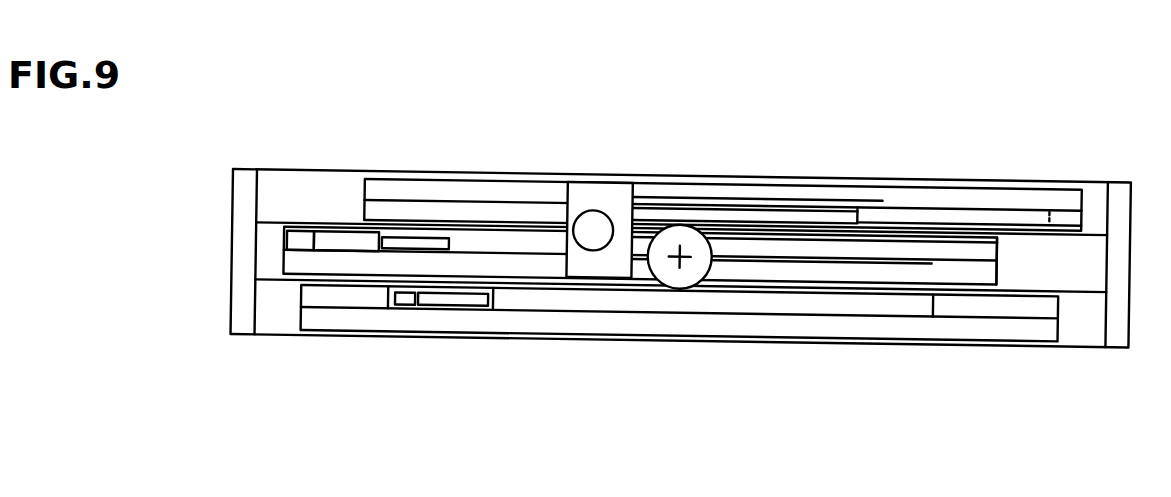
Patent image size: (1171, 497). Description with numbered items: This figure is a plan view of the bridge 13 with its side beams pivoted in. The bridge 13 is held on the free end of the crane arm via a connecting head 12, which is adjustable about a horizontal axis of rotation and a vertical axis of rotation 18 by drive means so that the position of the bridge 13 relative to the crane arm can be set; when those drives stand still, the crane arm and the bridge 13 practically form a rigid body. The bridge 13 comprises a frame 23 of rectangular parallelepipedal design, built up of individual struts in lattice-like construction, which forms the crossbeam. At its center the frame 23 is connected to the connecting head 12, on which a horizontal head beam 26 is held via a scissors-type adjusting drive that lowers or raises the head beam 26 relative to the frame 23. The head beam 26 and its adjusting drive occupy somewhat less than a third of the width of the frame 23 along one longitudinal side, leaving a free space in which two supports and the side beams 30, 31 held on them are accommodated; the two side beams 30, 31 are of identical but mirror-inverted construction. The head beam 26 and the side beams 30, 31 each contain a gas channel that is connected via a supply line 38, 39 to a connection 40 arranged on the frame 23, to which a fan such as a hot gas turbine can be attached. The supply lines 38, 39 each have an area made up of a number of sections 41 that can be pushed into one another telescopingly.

The connecting head 12 is at (699, 244).
The bridge 13 is at (480, 158).
The vertical axis of rotation 18 is at (685, 266).
The frame 23 is at (266, 160).
The horizontal head beam 26 is at (802, 305).
The side beam 30 is at (1012, 254).
The side beam 31 is at (346, 192).
The supply line 38 is at (414, 312).
The supply line 39 is at (876, 198).
The connection 40 is at (621, 190).
The sections 41 is at (423, 236).